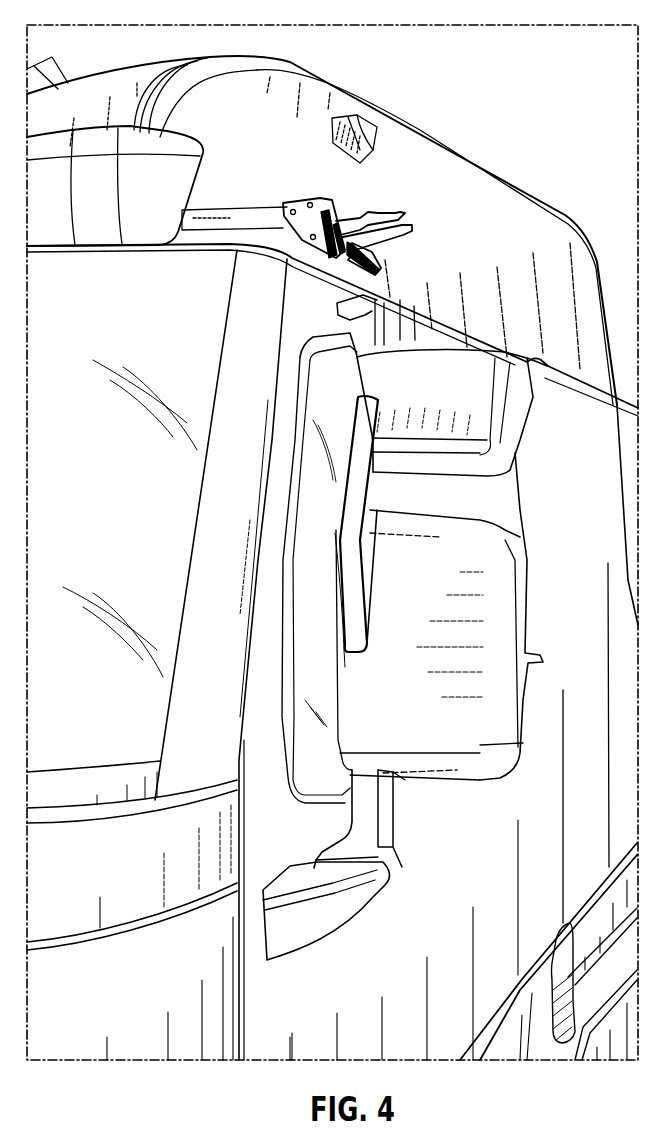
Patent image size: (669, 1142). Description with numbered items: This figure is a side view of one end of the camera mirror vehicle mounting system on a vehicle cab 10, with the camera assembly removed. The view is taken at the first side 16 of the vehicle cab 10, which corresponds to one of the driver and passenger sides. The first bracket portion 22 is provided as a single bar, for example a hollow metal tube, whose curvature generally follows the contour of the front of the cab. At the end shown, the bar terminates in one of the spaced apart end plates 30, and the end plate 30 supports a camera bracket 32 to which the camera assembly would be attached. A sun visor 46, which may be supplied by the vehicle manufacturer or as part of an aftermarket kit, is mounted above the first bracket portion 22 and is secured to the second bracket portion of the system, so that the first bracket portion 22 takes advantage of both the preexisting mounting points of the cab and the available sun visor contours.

The vehicle cab 10 is at (520, 206).
The first side 16 is at (601, 538).
The first bracket portion 22 is at (242, 220).
The end plate 30 is at (320, 205).
The camera bracket 32 is at (398, 233).
The sun visor 46 is at (170, 150).